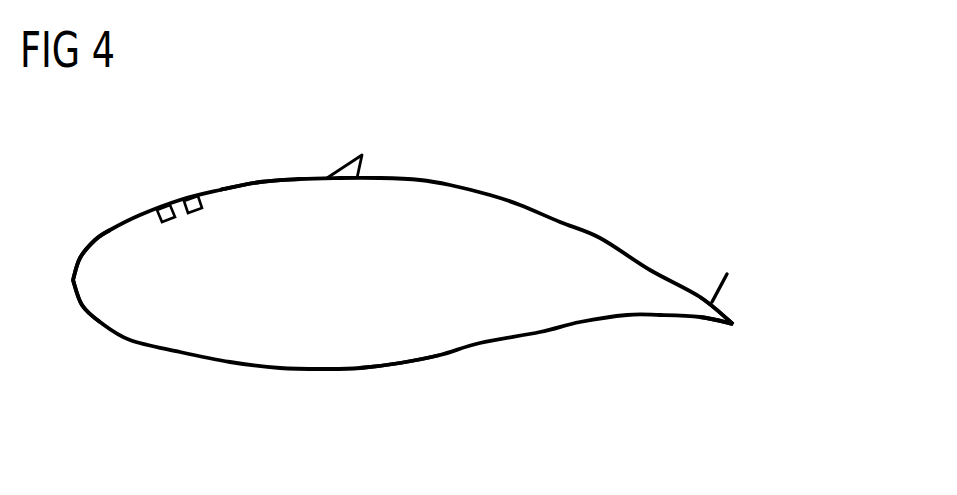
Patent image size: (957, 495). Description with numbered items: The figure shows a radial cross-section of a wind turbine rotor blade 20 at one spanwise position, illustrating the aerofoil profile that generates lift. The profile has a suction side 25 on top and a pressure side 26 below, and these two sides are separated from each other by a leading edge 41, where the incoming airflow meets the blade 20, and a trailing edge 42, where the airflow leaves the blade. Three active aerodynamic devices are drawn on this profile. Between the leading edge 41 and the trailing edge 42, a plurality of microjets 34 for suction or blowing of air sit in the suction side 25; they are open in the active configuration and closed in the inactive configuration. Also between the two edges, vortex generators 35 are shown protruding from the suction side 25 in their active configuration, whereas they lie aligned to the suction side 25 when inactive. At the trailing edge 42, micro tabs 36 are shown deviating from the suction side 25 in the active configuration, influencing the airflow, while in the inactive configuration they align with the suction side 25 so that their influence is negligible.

The rotor blade 20 is at (610, 260).
The suction side 25 is at (263, 182).
The pressure side 26 is at (404, 364).
The microjets 34 is at (163, 208).
The vortex generators 35 is at (350, 171).
The micro tabs 36 is at (720, 288).
The leading edge 41 is at (82, 308).
The trailing edge 42 is at (735, 325).